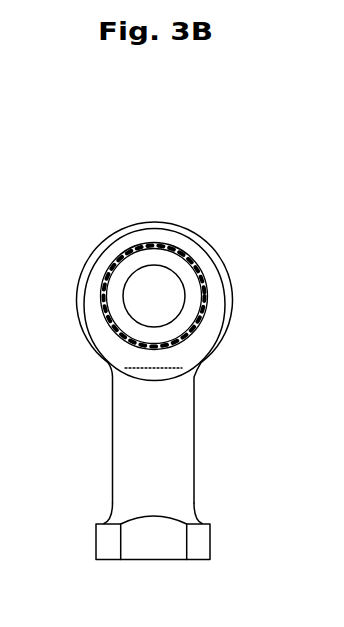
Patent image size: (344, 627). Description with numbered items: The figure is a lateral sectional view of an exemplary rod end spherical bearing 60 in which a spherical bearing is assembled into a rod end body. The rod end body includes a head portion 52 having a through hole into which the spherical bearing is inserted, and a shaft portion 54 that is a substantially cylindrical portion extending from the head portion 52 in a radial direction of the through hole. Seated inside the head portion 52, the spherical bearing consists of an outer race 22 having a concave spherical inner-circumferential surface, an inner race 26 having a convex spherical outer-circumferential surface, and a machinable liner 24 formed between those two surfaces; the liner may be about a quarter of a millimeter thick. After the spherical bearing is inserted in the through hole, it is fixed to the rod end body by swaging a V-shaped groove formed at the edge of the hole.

The outer race 22 is at (179, 242).
The machinable liner 24 is at (117, 261).
The inner race 26 is at (172, 328).
The head portion 52 is at (113, 237).
The shaft portion 54 is at (135, 440).
The rod end spherical bearing 60 is at (231, 233).